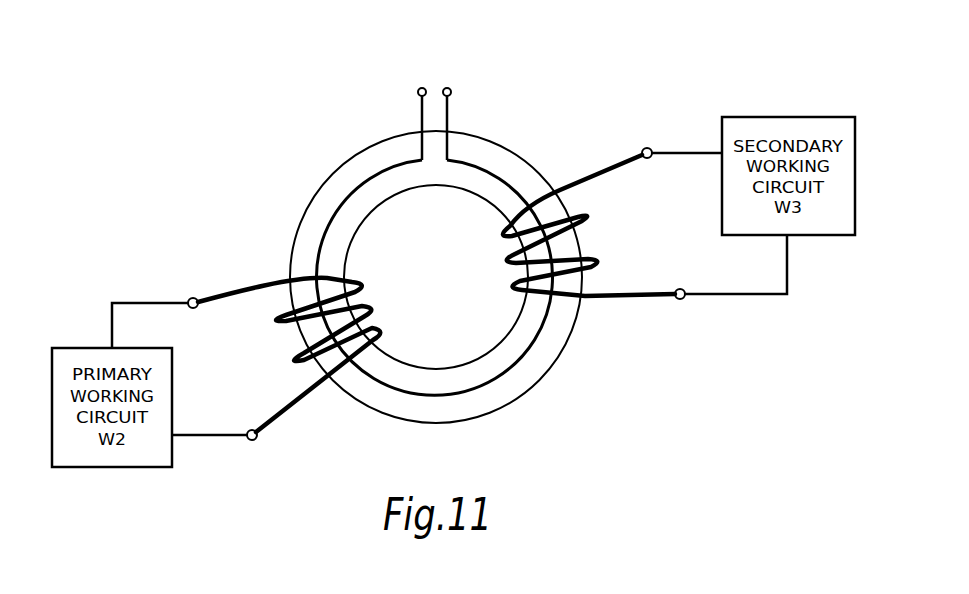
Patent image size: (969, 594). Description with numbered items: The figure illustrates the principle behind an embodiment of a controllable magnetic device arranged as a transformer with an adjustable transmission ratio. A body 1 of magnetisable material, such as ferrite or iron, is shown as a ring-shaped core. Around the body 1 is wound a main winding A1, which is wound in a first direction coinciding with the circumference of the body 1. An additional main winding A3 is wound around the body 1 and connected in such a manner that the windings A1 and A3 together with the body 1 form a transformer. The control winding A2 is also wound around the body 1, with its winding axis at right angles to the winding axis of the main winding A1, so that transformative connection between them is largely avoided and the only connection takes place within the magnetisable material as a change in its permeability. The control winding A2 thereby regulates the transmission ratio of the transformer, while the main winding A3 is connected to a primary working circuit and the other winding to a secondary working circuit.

The body 1 is at (515, 387).
The main winding A1 is at (156, 309).
The control winding A2 is at (434, 110).
The additional main winding A3 is at (678, 140).